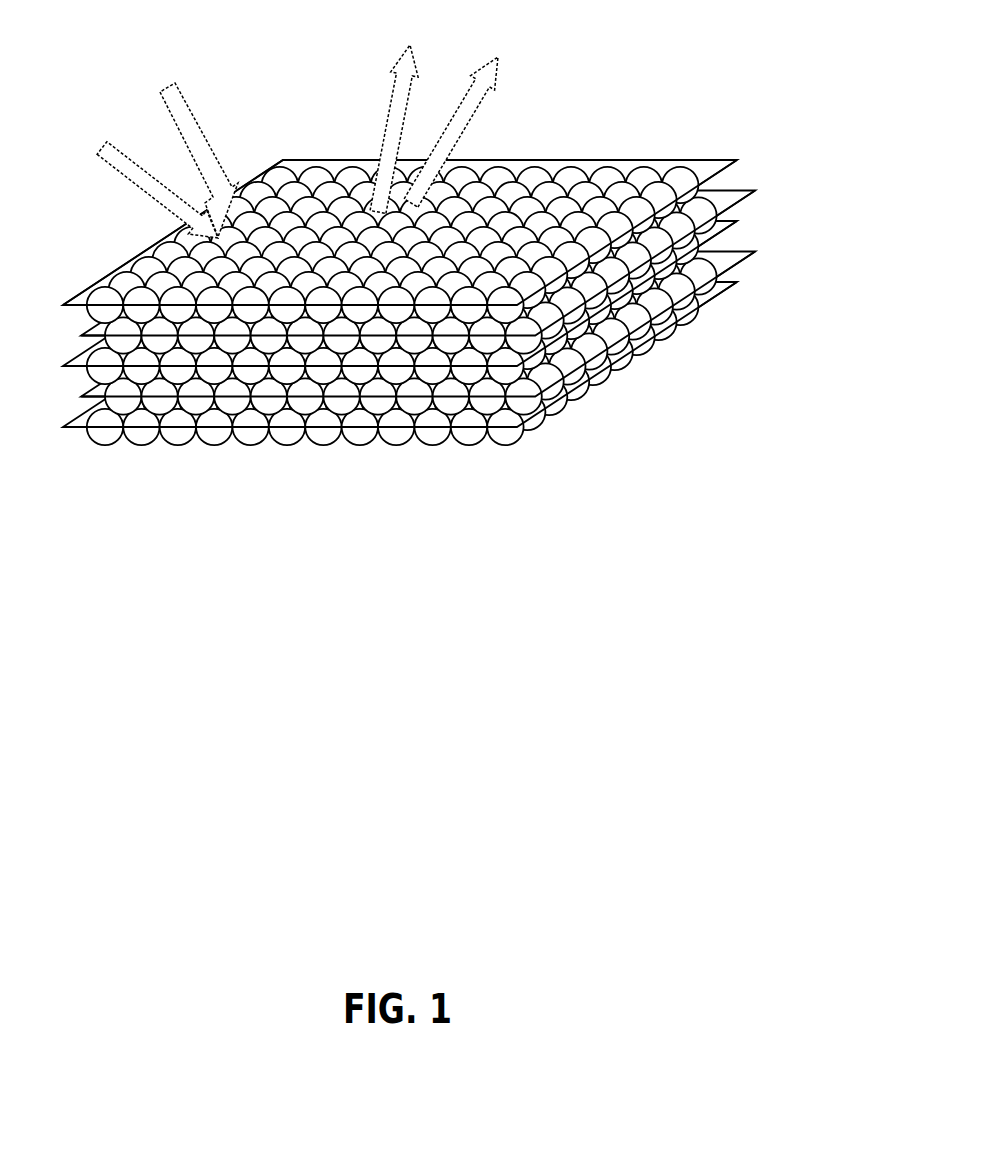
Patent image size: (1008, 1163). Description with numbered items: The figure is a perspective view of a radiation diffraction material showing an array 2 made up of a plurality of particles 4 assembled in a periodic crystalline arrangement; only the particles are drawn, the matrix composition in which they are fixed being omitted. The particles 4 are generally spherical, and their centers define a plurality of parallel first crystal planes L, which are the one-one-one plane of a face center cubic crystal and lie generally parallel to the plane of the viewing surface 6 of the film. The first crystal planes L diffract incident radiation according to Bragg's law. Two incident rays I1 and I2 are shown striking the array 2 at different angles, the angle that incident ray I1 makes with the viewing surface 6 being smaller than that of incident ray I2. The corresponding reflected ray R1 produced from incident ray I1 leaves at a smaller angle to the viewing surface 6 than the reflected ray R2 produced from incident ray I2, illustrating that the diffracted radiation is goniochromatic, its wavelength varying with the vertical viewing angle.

The array 2 is at (456, 267).
The particles 4 is at (572, 178).
The viewing surface 6 is at (662, 160).
The first crystal planes L is at (441, 313).
The incident ray I1 is at (143, 177).
The incident ray I2 is at (189, 142).
The reflected ray R1 is at (468, 117).
The reflected ray R2 is at (400, 111).